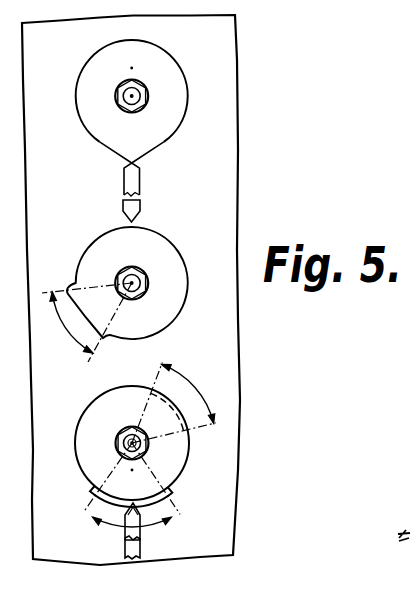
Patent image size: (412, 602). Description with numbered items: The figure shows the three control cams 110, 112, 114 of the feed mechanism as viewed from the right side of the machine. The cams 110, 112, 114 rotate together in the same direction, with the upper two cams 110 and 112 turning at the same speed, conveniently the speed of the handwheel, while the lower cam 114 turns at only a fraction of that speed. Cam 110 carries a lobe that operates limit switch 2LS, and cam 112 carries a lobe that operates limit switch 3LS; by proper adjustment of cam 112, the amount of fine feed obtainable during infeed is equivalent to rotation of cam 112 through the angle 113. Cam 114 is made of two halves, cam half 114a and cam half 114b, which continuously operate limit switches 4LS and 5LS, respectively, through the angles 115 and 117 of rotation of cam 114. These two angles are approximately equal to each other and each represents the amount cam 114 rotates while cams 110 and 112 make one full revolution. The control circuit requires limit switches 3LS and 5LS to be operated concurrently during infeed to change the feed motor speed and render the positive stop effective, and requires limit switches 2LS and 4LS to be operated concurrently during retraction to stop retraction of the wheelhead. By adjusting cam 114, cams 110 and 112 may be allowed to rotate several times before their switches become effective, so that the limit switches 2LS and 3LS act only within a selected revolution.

The control cam 110 is at (76, 100).
The limit switch 2LS is at (143, 182).
The limit switch 3LS is at (143, 210).
The control cam 112 is at (90, 245).
The angle 113 is at (60, 312).
The control cam 114 is at (78, 413).
The cam half 114a is at (92, 492).
The cam half 114b is at (153, 387).
The angle 115 is at (152, 527).
The angle 117 is at (198, 390).
The limit switch 5LS is at (125, 532).
The limit switch 4LS is at (125, 548).